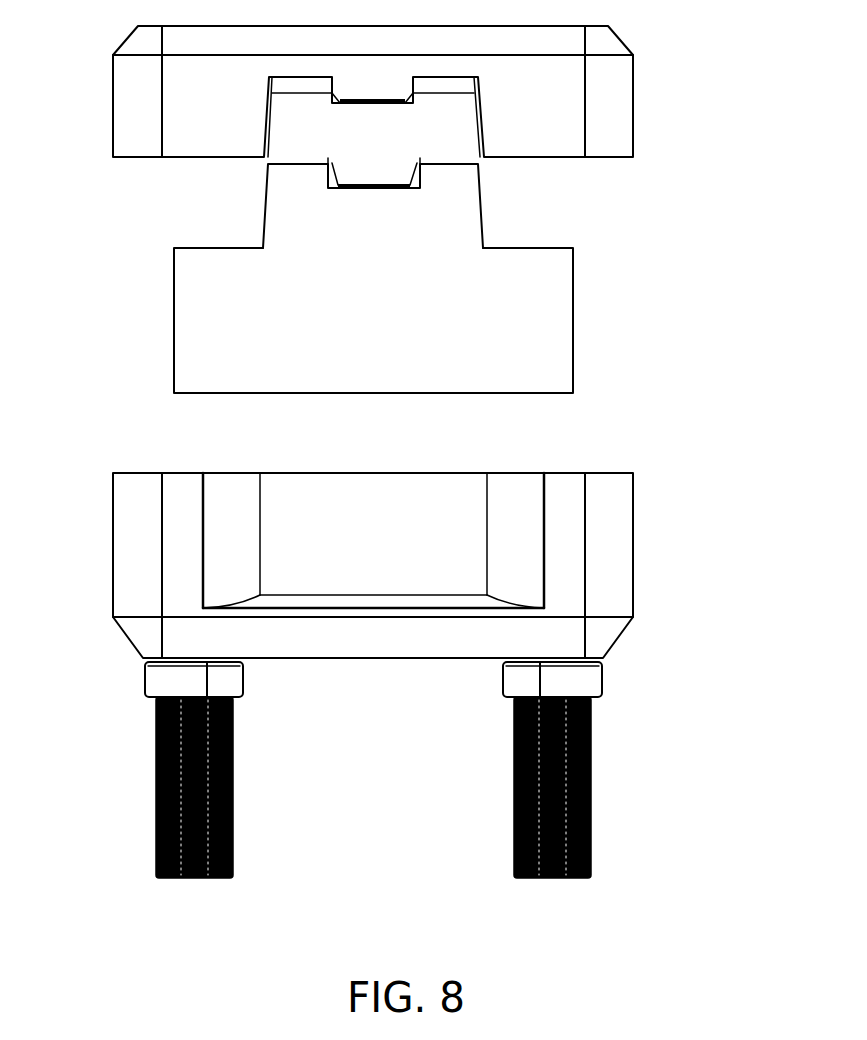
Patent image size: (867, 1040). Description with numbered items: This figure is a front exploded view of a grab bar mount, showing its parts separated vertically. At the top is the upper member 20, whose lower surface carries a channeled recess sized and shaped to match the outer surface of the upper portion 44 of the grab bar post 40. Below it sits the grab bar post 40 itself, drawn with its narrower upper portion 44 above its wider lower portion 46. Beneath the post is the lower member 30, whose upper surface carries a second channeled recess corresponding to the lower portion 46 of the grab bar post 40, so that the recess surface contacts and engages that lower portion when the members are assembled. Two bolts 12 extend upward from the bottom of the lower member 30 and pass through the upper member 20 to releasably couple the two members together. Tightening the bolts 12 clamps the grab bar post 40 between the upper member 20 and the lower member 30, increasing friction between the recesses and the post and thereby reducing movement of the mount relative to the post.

The bolts 12 is at (590, 778).
The upper member 20 is at (570, 85).
The lower member 30 is at (612, 542).
The grab bar post 40 is at (411, 275).
The upper portion of the grab bar post 44 is at (556, 209).
The lower portion of the grab bar post 46 is at (603, 315).